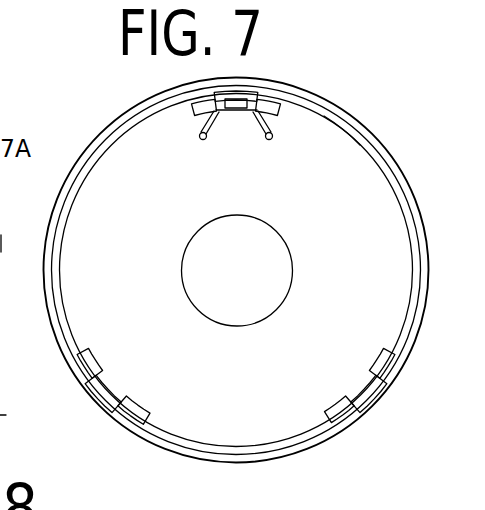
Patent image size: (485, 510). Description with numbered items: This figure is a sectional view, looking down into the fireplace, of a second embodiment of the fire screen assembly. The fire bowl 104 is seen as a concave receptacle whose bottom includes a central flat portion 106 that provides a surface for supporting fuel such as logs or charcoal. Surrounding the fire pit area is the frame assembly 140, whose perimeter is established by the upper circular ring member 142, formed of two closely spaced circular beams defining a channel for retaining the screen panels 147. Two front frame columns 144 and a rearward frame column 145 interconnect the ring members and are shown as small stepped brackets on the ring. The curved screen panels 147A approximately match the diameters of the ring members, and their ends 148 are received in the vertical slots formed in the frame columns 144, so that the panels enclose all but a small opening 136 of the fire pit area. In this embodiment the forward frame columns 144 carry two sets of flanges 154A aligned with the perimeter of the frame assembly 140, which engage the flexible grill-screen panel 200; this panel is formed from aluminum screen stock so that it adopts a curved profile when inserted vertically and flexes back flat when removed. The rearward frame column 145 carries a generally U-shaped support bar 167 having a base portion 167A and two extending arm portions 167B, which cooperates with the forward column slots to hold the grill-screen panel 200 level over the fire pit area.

The fire bowl 104 is at (325, 221).
The central flat portion 106 is at (252, 268).
The small opening 136 is at (271, 402).
The frame assembly 140 is at (396, 413).
The upper circular ring member 142 is at (57, 345).
The front frame column 144 is at (88, 414).
The rearward frame column 145 is at (245, 83).
The screen panel 147 is at (97, 153).
The curved screen panel 147A is at (343, 128).
The screen panel end 148 is at (213, 97).
The interior flange 154A is at (143, 403).
The support bar 167 is at (232, 129).
The base portion 167A is at (243, 111).
The arm portion 167B is at (203, 139).
The grill-screen panel 200 is at (199, 441).